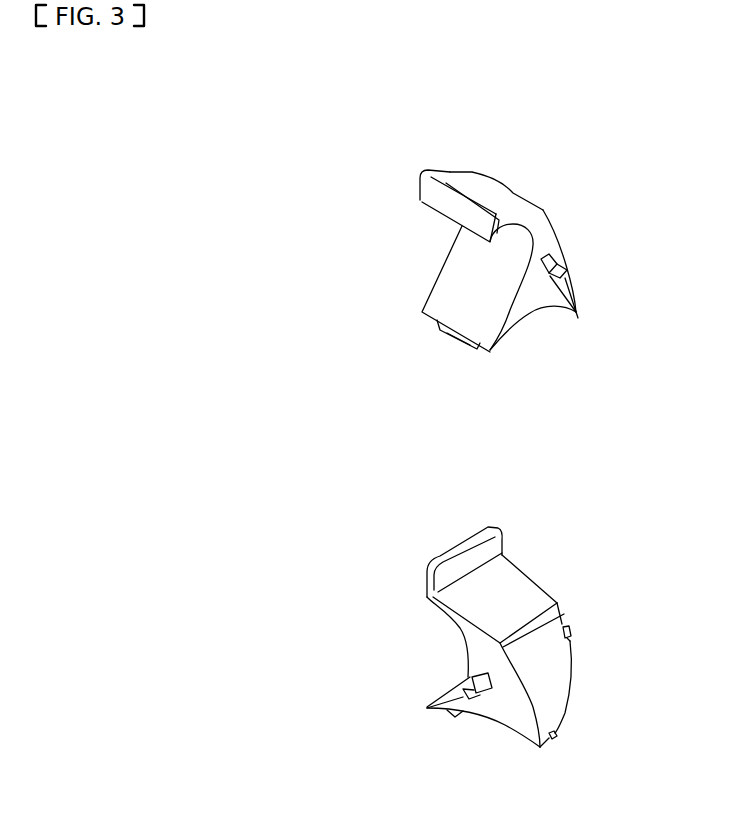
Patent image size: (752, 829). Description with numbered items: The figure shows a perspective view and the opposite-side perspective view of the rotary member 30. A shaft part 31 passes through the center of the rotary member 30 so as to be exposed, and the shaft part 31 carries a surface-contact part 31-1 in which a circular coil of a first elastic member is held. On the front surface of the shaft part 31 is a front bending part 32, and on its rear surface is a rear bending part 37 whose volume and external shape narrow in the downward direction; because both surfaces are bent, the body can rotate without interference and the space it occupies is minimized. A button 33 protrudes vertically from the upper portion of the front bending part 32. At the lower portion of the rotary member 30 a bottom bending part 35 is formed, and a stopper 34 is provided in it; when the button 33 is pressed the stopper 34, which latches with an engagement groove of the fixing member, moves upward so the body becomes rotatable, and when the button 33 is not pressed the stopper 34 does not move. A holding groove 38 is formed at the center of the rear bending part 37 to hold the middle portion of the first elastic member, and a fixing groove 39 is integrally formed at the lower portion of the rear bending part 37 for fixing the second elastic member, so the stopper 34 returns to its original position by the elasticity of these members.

The rotary member 30 is at (550, 167).
The shaft part 31 is at (566, 268).
The surface-contact part 31-1 is at (578, 320).
The front bending part 32 is at (483, 260).
The button 33 is at (450, 198).
The stopper 34 is at (452, 342).
The bottom bending part 35 is at (523, 318).
The rear bending part 37 is at (515, 592).
The holding groove 38 is at (541, 628).
The fixing groove 39 is at (554, 738).